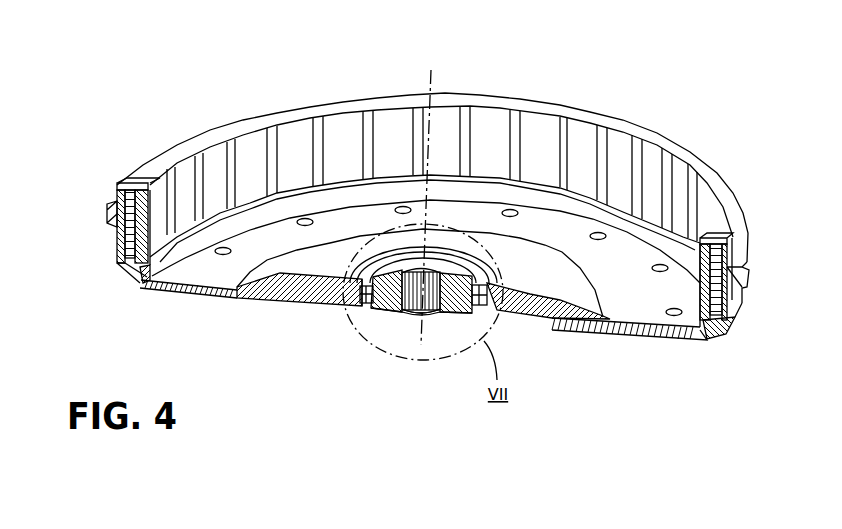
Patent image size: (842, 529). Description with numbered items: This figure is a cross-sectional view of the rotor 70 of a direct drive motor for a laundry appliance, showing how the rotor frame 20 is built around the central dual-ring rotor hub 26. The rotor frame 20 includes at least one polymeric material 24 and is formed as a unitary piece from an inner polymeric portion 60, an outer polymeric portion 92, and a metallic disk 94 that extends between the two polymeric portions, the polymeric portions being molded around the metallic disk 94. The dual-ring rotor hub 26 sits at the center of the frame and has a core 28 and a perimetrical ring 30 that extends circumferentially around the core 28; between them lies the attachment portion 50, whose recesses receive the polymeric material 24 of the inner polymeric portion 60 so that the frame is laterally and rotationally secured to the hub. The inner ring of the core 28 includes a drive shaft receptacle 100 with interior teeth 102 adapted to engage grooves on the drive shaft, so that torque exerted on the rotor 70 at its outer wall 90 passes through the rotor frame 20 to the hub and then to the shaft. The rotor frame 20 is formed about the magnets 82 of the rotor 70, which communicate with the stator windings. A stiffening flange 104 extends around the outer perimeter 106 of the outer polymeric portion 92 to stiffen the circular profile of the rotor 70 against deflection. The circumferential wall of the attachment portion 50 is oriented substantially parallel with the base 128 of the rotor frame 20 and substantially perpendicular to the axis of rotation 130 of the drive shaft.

The rotor frame 20 is at (194, 300).
The polymeric material 24 is at (306, 292).
The dual-ring rotor hub 26 is at (381, 314).
The core 28 is at (445, 318).
The perimetrical ring 30 is at (505, 318).
The attachment portion 50 is at (476, 290).
The inner polymeric portion 60 is at (352, 288).
The rotor 70 is at (641, 97).
The magnets 82 is at (117, 195).
The outer wall 90 is at (750, 255).
The outer polymeric portion 92 is at (720, 331).
The metallic disk 94 is at (148, 286).
The drive shaft receptacle 100 is at (445, 270).
The interior teeth 102 is at (410, 270).
The stiffening flange 104 is at (107, 216).
The outer perimeter 106 is at (112, 252).
The base 128 is at (272, 305).
The axis of rotation 130 is at (433, 78).